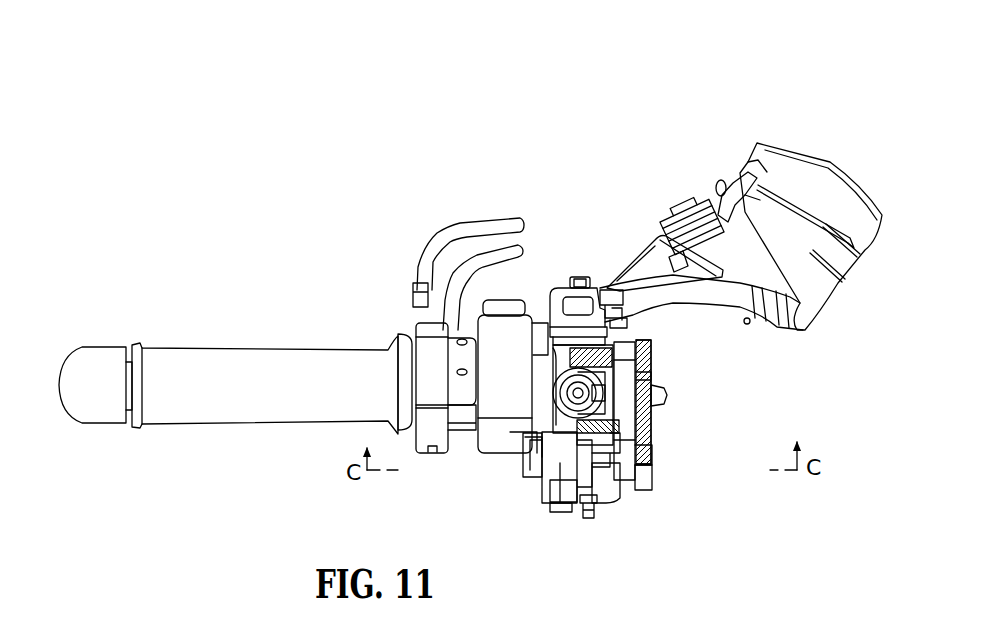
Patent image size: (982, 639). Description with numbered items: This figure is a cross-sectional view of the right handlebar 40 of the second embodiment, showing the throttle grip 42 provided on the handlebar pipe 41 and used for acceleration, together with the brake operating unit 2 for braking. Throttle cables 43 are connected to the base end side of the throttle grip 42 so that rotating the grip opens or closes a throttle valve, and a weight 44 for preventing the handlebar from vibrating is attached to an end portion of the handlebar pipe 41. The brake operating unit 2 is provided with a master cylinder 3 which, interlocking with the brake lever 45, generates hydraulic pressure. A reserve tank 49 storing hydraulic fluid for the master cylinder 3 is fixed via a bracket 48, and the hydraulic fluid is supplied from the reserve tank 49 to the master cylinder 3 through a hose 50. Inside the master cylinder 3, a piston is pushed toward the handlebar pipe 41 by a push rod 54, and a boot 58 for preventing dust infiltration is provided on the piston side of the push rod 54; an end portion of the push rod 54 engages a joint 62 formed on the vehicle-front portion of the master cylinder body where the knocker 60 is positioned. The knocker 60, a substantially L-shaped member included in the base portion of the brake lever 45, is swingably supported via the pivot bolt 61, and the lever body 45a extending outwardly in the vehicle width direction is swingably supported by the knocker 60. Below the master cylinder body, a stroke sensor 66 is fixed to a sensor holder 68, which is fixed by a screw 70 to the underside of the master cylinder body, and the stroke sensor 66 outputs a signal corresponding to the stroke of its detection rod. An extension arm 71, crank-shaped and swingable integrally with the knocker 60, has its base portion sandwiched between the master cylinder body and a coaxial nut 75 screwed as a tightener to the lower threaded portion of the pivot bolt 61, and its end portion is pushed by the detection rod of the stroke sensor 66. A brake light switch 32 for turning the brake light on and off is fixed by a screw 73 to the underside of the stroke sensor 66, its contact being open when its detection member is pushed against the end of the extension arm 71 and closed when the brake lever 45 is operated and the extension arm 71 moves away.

The right handlebar 40 is at (416, 103).
The weight 44 is at (97, 356).
The throttle grip 42 is at (240, 352).
The push rod 54 is at (557, 390).
The throttle cables 43 is at (478, 260).
The handlebar pipe 41 is at (540, 355).
The boot 58 is at (560, 330).
The bracket 48 is at (638, 270).
The hose 50 is at (697, 290).
The reserve tank 49 is at (797, 160).
The master cylinder 3 is at (541, 424).
The pivot bolt 61 is at (628, 353).
The brake lever 45 is at (660, 369).
The lever body 45a is at (651, 377).
The knocker 60 is at (652, 398).
The brake operating unit 2 is at (670, 398).
The joint 62 is at (540, 468).
The stroke sensor 66 is at (553, 492).
The brake light switch 32 is at (557, 510).
The sensor holder 68 is at (563, 514).
The screw 73 is at (581, 508).
The screw 70 is at (597, 468).
The extension arm 71 is at (651, 457).
The coaxial nut 75 is at (644, 480).